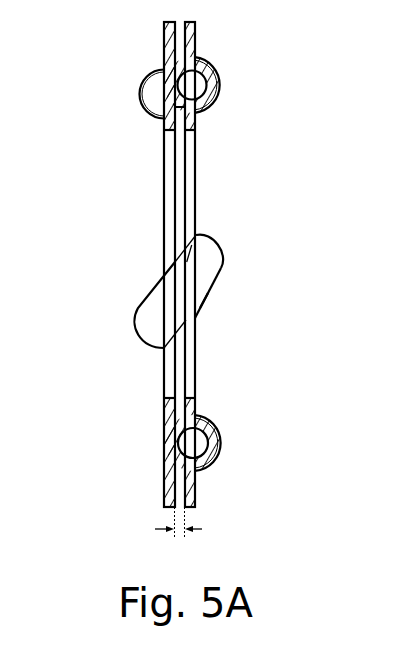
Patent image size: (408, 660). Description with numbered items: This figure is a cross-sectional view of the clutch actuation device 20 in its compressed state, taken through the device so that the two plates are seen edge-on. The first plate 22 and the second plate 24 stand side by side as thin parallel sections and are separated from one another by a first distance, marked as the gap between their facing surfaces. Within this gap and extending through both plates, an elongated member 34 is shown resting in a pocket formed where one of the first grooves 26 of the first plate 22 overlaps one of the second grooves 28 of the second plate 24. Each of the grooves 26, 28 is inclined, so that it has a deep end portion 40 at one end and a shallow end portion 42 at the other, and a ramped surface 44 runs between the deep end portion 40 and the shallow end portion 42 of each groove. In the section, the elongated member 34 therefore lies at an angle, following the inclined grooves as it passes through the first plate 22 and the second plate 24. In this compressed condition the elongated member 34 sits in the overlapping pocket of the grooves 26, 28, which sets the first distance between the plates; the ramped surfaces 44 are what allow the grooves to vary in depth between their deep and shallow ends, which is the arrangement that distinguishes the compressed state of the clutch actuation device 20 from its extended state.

The clutch actuation device 20 is at (166, 296).
The first plate 22 is at (165, 187).
The second plate 24 is at (187, 173).
The first groove 26 is at (136, 302).
The second groove 28 is at (211, 275).
The elongated member 34 is at (181, 290).
The deep end portion 40 is at (206, 246).
The shallow end portion 42 is at (202, 303).
The ramped surface 44 is at (213, 290).